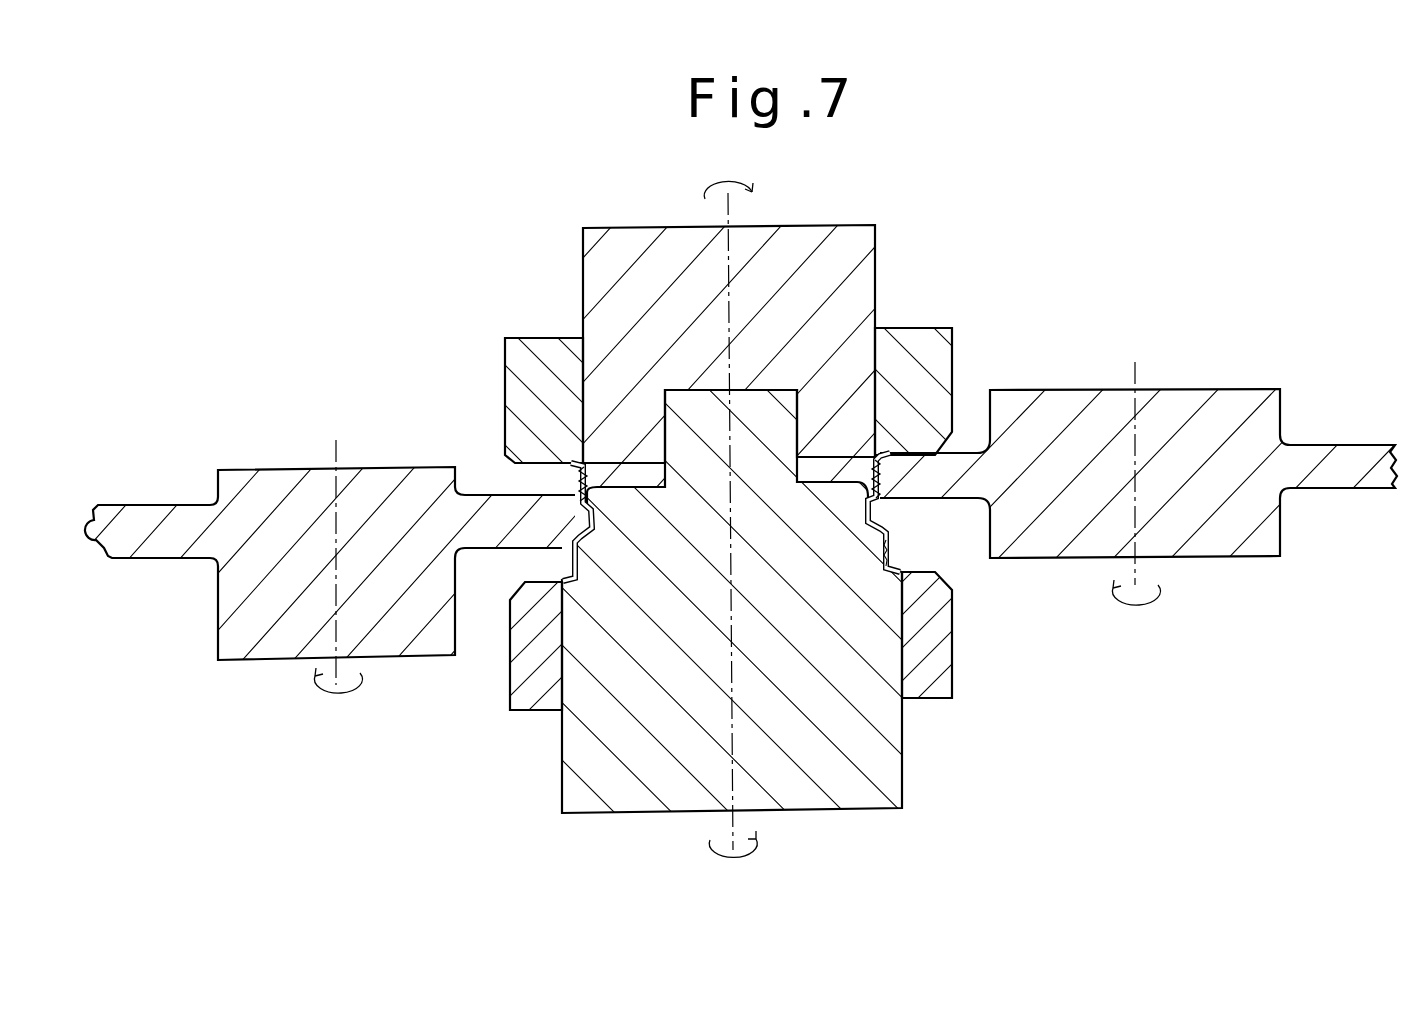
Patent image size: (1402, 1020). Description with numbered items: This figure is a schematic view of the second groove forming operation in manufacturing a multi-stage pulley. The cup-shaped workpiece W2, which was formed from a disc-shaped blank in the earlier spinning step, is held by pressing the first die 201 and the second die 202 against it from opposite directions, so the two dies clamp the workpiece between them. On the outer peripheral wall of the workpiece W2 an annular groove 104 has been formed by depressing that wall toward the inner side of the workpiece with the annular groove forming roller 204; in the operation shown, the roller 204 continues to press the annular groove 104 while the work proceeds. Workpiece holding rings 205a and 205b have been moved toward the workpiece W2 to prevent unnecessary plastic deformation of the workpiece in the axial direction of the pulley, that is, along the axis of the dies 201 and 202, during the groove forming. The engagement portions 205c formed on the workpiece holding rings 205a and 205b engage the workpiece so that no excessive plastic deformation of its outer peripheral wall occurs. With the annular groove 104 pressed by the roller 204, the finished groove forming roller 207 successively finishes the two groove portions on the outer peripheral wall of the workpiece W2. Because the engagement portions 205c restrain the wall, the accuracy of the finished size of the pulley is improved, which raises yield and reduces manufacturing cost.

The first die 201 is at (623, 263).
The second die 202 is at (638, 750).
The annular groove forming roller 204 is at (270, 497).
The finished groove forming roller 207 is at (1190, 427).
The workpiece holding ring 205a is at (927, 343).
The workpiece holding ring 205b is at (930, 672).
The engagement portions 205c is at (572, 466).
The workpiece W2 is at (853, 465).
The annular groove 104 is at (887, 513).